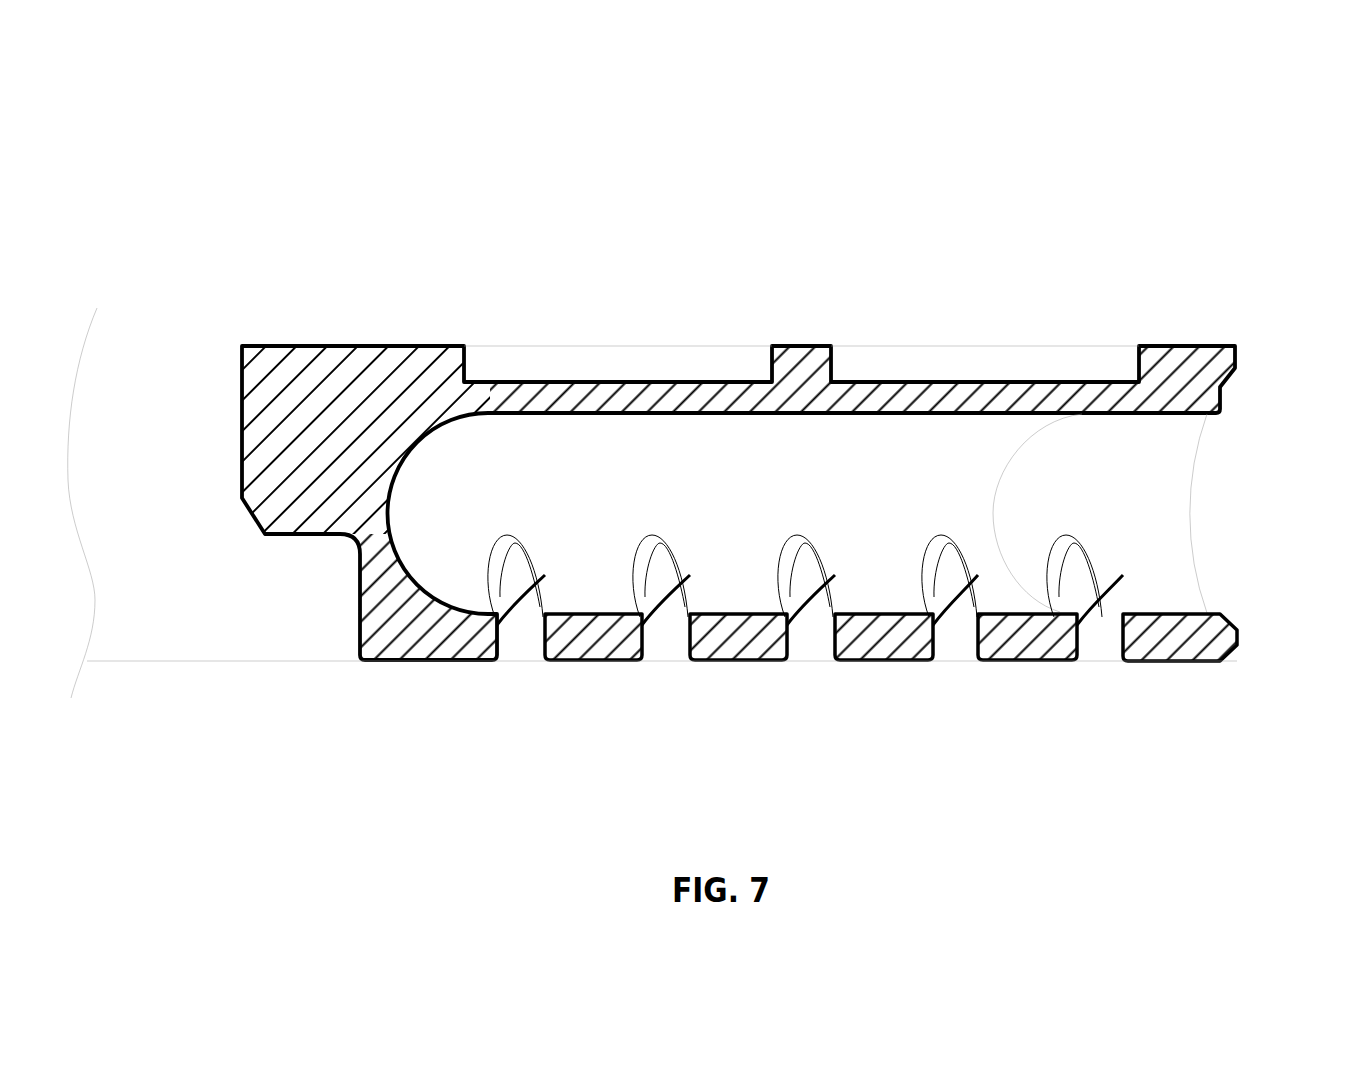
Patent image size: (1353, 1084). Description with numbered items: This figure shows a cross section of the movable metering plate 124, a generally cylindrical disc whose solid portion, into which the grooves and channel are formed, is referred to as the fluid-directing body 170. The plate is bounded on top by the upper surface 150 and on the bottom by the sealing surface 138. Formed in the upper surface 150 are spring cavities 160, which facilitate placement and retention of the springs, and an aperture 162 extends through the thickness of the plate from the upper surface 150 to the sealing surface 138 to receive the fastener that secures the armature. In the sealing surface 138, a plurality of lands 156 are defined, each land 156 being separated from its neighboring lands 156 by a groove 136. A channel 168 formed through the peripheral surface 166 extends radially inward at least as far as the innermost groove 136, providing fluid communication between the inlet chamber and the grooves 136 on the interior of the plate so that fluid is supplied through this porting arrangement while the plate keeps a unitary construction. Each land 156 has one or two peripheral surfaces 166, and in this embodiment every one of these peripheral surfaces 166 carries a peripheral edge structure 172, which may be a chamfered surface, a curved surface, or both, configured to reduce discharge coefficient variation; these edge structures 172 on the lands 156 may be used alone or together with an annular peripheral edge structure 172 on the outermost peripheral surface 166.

The movable metering plate 124 is at (1023, 151).
The upper surface 150 is at (738, 458).
The fluid-directing body 170 is at (313, 360).
The aperture 162 is at (177, 335).
The spring cavities 160 is at (645, 345).
The peripheral surface 166 is at (1262, 402).
The channel 168 is at (1200, 453).
The lands 156 is at (593, 662).
The sealing surface 138 is at (1168, 662).
The grooves 136 is at (522, 678).
The peripheral edge structure 172 is at (495, 678).